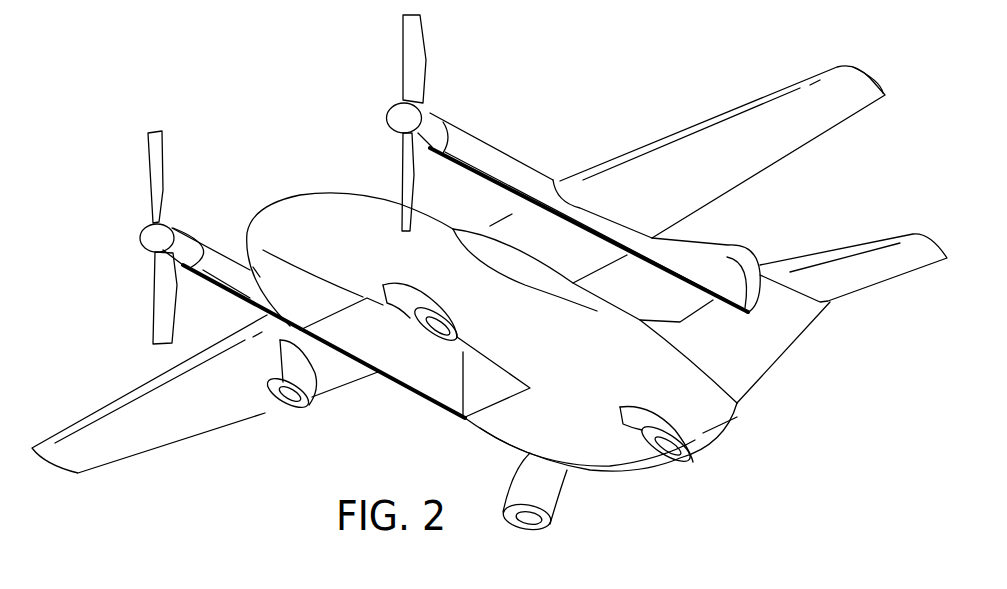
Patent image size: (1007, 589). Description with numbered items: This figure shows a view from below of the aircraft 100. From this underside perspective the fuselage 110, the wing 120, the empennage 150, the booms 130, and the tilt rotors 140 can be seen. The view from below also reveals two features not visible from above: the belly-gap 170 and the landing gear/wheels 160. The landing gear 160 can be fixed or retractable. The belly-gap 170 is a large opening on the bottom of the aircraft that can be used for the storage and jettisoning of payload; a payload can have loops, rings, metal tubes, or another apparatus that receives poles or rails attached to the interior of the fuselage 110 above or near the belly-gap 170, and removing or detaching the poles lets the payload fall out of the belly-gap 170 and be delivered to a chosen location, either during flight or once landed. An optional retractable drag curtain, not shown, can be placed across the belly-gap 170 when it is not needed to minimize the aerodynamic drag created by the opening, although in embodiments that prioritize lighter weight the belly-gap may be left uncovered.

The aircraft 100 is at (232, 103).
The fuselage 110 is at (302, 197).
The wing 120 is at (700, 123).
The booms 130 is at (492, 148).
The tilt rotors 140 is at (147, 175).
The empennage 150 is at (867, 290).
The landing gear/wheels 160 is at (443, 312).
The belly-gap 170 is at (423, 380).